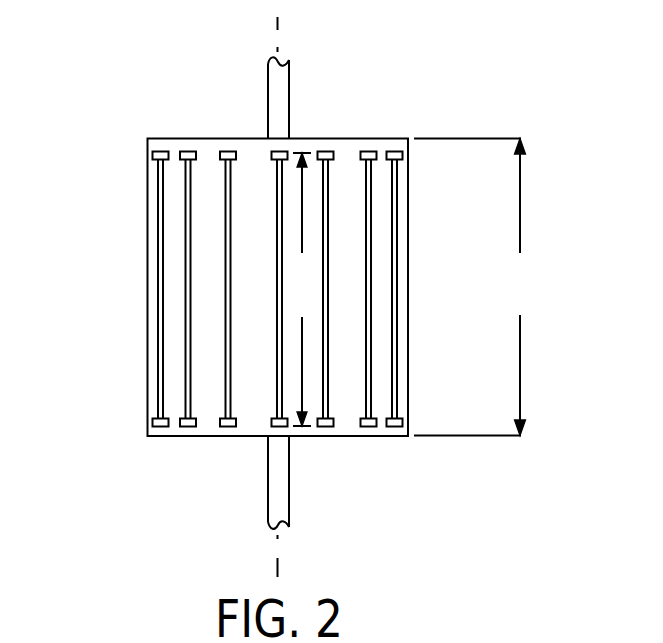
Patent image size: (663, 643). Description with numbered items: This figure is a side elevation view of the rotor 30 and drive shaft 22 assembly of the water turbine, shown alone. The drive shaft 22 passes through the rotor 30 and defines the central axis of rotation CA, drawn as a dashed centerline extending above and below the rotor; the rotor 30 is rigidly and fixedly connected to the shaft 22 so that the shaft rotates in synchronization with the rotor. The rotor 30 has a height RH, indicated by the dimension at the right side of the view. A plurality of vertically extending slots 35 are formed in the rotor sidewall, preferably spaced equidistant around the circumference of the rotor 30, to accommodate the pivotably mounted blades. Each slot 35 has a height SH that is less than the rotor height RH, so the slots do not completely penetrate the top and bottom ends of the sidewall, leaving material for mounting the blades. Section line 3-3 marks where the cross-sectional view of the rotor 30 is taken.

The rotor 30 is at (97, 143).
The drive shaft 22 is at (268, 110).
The slots 35 is at (230, 320).
The section line 3- 3 is at (106, 193).
The central axis of rotation CA is at (277, 22).
The slot height SH is at (303, 289).
The rotor height RH is at (475, 287).